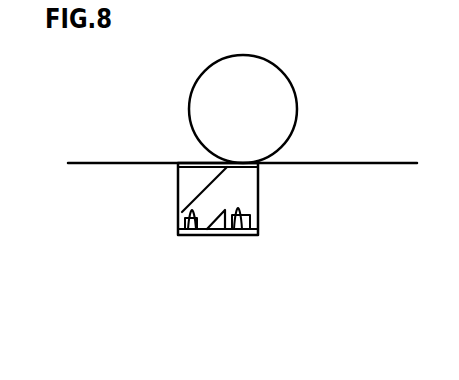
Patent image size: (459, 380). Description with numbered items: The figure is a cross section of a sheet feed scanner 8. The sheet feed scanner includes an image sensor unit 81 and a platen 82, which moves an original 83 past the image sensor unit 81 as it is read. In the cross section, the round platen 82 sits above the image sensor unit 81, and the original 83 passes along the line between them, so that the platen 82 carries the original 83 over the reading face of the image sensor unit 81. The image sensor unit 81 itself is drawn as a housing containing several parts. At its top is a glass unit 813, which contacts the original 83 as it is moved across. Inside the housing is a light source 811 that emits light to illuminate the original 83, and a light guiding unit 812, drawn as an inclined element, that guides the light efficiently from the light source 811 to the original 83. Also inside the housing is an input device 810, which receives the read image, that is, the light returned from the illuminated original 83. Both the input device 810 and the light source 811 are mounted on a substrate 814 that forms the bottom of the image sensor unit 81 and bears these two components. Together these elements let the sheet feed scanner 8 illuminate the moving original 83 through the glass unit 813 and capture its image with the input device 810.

The optical module 8 is at (233, 347).
The image sensor unit 81 is at (259, 190).
The platen 82 is at (295, 98).
The original 83 is at (353, 162).
The input device 810 is at (245, 235).
The light source 811 is at (188, 235).
The light guiding unit 812 is at (215, 194).
The glass unit 813 is at (178, 169).
The substrate 814 is at (220, 235).